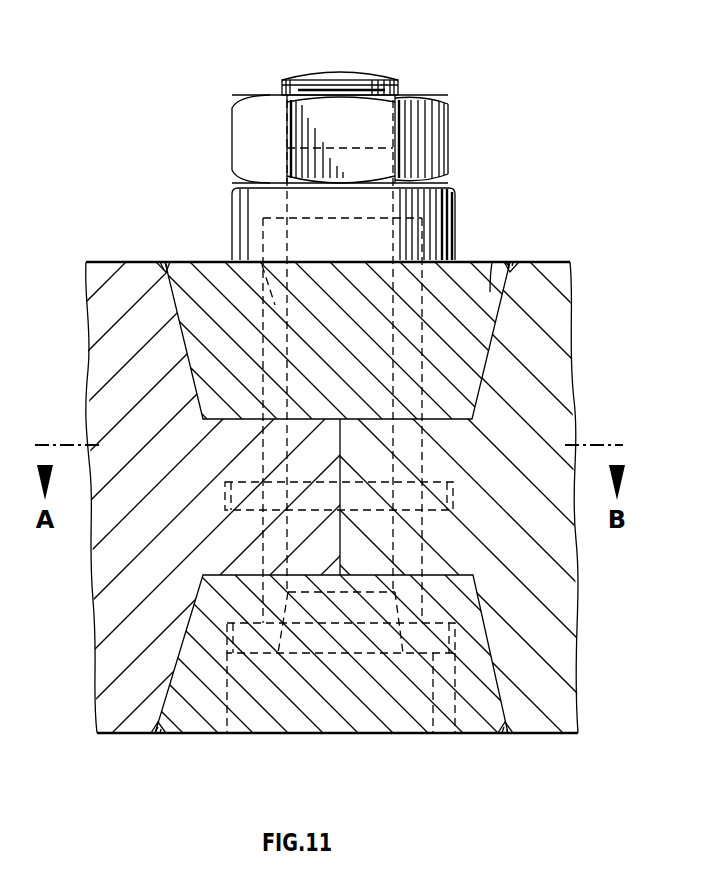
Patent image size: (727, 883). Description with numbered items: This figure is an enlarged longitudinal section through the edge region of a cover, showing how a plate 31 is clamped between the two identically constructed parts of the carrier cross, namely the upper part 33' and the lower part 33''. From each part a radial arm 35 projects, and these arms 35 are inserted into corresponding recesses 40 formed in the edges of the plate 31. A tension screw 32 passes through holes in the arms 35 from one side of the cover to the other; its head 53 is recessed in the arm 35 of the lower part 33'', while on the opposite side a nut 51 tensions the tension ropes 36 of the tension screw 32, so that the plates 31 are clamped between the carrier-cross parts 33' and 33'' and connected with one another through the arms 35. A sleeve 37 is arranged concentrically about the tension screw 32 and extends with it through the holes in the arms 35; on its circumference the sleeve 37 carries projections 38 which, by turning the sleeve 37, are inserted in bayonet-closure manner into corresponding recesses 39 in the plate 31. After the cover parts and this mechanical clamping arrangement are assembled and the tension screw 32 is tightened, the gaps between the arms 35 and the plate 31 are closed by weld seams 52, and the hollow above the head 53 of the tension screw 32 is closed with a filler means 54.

The plate 31 is at (107, 297).
The tension screw 32 is at (262, 82).
The upper part of the carrier cross 33' is at (482, 215).
The lower part of the carrier cross 33'' is at (487, 769).
The arm 35 is at (213, 302).
The tension rope 36 is at (313, 548).
The sleeve 37 is at (238, 242).
The projection 38 is at (238, 494).
The recess 39 is at (212, 502).
The recess 40 is at (491, 292).
The nut 51 is at (255, 110).
The weld seam 52 is at (515, 262).
The head 53 is at (431, 733).
The filler means 54 is at (397, 715).